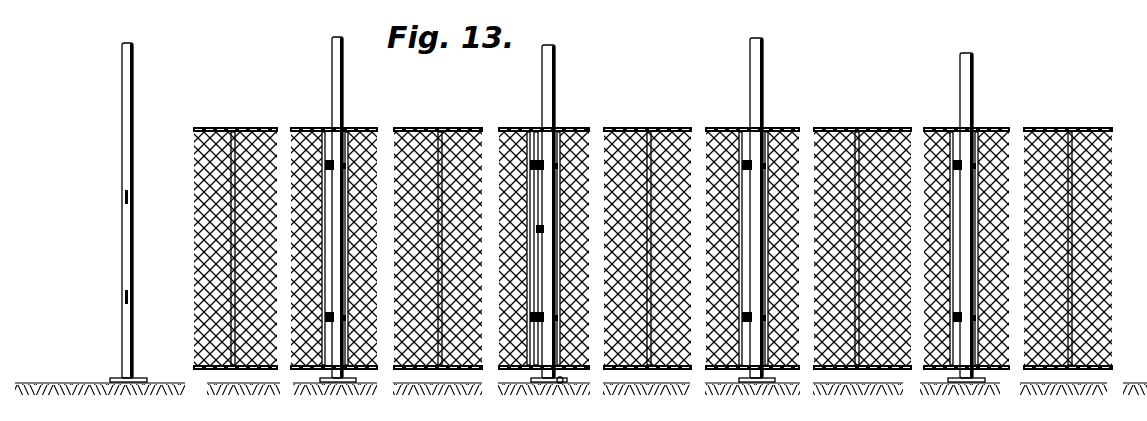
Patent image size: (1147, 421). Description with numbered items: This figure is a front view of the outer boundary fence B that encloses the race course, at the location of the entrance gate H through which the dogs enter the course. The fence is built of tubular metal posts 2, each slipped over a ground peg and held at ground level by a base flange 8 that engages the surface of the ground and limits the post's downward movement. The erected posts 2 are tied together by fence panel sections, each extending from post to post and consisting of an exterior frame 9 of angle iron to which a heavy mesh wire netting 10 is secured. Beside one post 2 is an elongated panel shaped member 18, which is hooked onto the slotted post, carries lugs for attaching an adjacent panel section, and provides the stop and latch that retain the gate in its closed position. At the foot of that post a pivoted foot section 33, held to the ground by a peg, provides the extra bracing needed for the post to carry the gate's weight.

The tubular metal post 2 is at (134, 88).
The base flange 8 is at (144, 380).
The exterior frame 9 is at (237, 127).
The heavy mesh wire netting 10 is at (262, 147).
The panel shaped member 18 is at (498, 140).
The pivoted foot section 33 is at (558, 386).
The outer boundary fence B is at (740, 95).
The entrance gate H is at (663, 119).